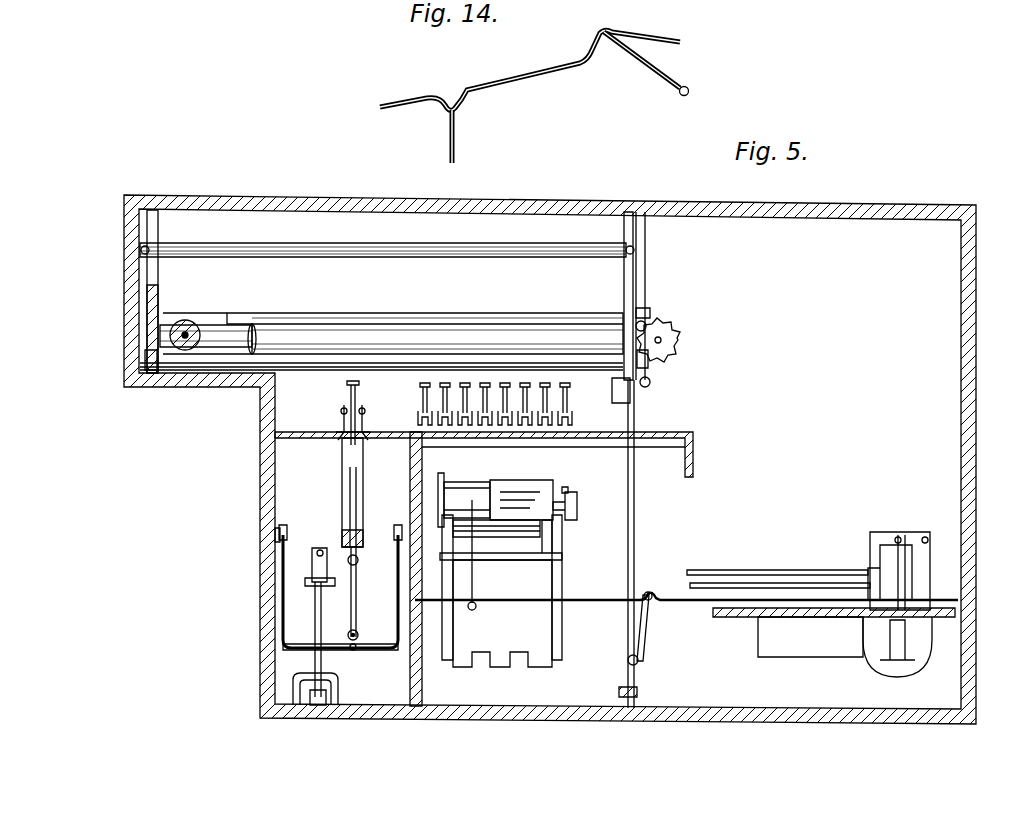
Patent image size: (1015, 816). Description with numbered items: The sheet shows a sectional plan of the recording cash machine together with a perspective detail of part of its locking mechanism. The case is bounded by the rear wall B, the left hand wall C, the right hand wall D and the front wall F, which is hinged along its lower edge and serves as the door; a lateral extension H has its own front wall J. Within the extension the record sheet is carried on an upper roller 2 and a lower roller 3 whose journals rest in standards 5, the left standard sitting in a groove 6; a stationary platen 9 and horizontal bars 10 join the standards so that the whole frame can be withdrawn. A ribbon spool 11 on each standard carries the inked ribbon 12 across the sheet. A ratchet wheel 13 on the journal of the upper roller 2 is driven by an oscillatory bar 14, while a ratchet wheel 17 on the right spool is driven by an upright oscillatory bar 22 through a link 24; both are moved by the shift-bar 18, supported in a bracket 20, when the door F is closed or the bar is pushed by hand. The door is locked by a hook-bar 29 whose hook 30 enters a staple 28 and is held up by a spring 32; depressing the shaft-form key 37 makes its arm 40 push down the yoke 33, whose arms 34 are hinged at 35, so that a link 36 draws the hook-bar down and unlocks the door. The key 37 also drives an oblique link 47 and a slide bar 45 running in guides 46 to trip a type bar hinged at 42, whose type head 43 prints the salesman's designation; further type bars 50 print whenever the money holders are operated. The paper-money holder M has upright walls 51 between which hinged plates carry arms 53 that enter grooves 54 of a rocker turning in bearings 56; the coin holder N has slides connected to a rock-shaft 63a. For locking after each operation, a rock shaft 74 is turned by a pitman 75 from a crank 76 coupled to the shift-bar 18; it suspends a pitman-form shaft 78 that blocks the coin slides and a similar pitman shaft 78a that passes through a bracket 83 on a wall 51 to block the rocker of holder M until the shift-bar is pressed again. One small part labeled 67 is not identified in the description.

In FIG. 5, the upper roller 2 is at (372, 316).
In FIG. 5, the lower roller 3 is at (248, 320).
In FIG. 5, the standards 5 is at (160, 240).
In FIG. 5, the groove 6 is at (646, 282).
In FIG. 5, the stationary platen 9 is at (312, 374).
In FIG. 5, the horizontal bars 10 is at (388, 246).
In FIG. 5, the ribbon spool 11 is at (200, 323).
In FIG. 5, the ribbon 12 is at (172, 315).
In FIG. 5, the ratchet wheel 13 is at (647, 325).
In FIG. 5, the oscillatory bar 14 is at (652, 312).
In FIG. 5, the ratchet wheel 17 is at (680, 338).
In FIG. 5, the shift-bar 18 is at (636, 565).
In FIG. 5, the bracket 20 is at (637, 395).
In FIG. 5, the upright oscillatory bar 22 is at (650, 385).
In FIG. 5, the link 24 is at (649, 366).
In FIG. 5, the staple 28 is at (338, 700).
In FIG. 5, the hook-bar 29 is at (775, 655).
In FIG. 5, the hook 30 is at (330, 687).
In FIG. 5, the spring 32 is at (312, 560).
In FIG. 5, the oscillating yoke 33 is at (340, 644).
In FIG. 5, the arms 34 is at (294, 602).
In FIG. 5, the hinge 35 is at (288, 530).
In FIG. 5, the link 36 is at (322, 650).
In FIG. 5, the shaft-form key 37 is at (358, 632).
In FIG. 5, the arm or bracket 40 is at (358, 650).
In FIG. 5, the hinge 42 is at (365, 412).
In FIG. 5, the type head 43 is at (358, 388).
In FIG. 5, the slide bar 45 is at (357, 500).
In FIG. 5, the guides 46 is at (362, 530).
In FIG. 5, the oblique link 47 is at (357, 598).
In FIG. 5, the type bars 50 is at (568, 388).
In FIG. 5, the upright walls 51 is at (442, 636).
In FIG. 5, the rearward arm 53 is at (552, 537).
In FIG. 5, the grooves 54 is at (532, 536).
In FIG. 5, the bearings 56 is at (452, 480).
In FIG. 5, the rock-shaft 63a is at (715, 572).
In FIG. 5, the disc 67 is at (438, 520).
In FIG. 14, the rock shaft 74 is at (533, 72).
In FIG. 5, the rock shaft 74 is at (522, 606).
In FIG. 14, the pitman 75 is at (672, 80).
In FIG. 5, the pitman 75 is at (645, 640).
In FIG. 5, the crank 76 is at (652, 592).
In FIG. 14, the pitman-form shaft 78 is at (455, 136).
In FIG. 5, the pitman-form shaft 78 is at (910, 530).
In FIG. 5, the pitman shaft 78a is at (478, 502).
In FIG. 5, the bracket 83 is at (475, 505).
In FIG. 5, the rear wall B is at (530, 200).
In FIG. 5, the left hand wall C is at (262, 545).
In FIG. 5, the right hand wall D is at (976, 497).
In FIG. 5, the front wall F is at (660, 724).
In FIG. 5, the lateral extension H is at (94, 312).
In FIG. 5, the front wall of extension J is at (180, 388).
In FIG. 5, the holder for paper money M is at (512, 678).
In FIG. 5, the holder for coin N is at (844, 672).